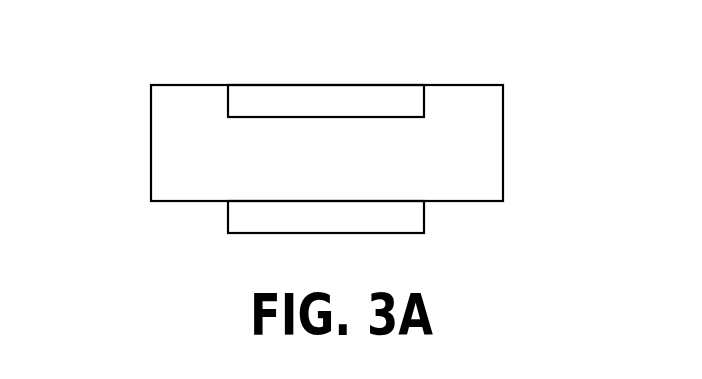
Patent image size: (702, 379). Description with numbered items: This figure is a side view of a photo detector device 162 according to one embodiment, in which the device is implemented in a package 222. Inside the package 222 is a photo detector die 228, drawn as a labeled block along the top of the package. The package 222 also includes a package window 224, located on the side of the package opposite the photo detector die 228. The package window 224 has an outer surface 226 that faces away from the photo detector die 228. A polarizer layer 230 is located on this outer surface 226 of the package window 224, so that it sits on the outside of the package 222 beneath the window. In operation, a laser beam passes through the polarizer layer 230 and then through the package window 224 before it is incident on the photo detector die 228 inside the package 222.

The photo detector device 162 is at (112, 132).
The package 222 is at (504, 161).
The package window 224 is at (188, 201).
The outer surface 226 is at (243, 201).
The photo detector die 228 is at (388, 95).
The polarizer layer 230 is at (387, 218).